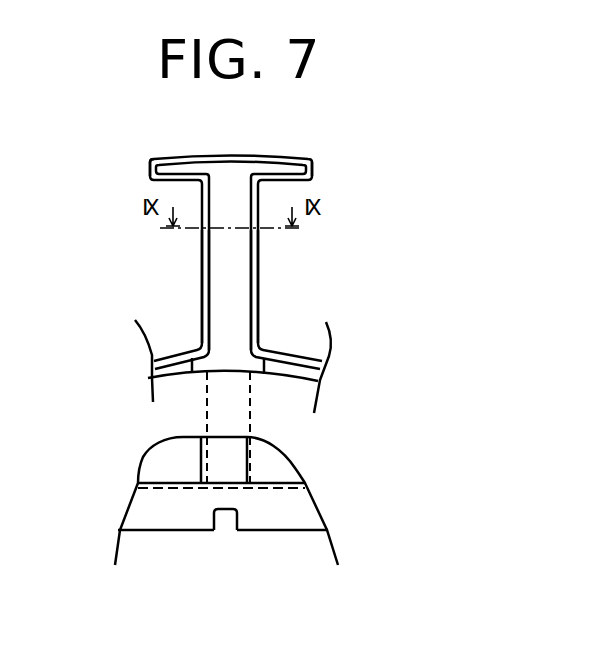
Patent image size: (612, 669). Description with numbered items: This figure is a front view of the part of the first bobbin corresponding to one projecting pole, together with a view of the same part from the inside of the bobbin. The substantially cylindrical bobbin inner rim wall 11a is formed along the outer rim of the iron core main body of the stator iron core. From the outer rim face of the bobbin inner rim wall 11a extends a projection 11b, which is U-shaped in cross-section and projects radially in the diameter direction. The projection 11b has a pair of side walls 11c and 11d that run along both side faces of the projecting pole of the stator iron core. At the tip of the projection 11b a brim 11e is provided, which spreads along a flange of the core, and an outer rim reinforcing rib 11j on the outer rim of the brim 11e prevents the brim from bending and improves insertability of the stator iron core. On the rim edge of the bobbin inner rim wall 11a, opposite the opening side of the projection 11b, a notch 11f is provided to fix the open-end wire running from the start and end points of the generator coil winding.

The bobbin inner rim wall 11a is at (283, 378).
The projection 11b is at (258, 262).
The side wall 11c is at (258, 301).
The side wall 11d is at (197, 305).
The brim 11e is at (280, 172).
The notch 11f is at (218, 532).
The outer rim reinforcing rib 11j is at (148, 166).